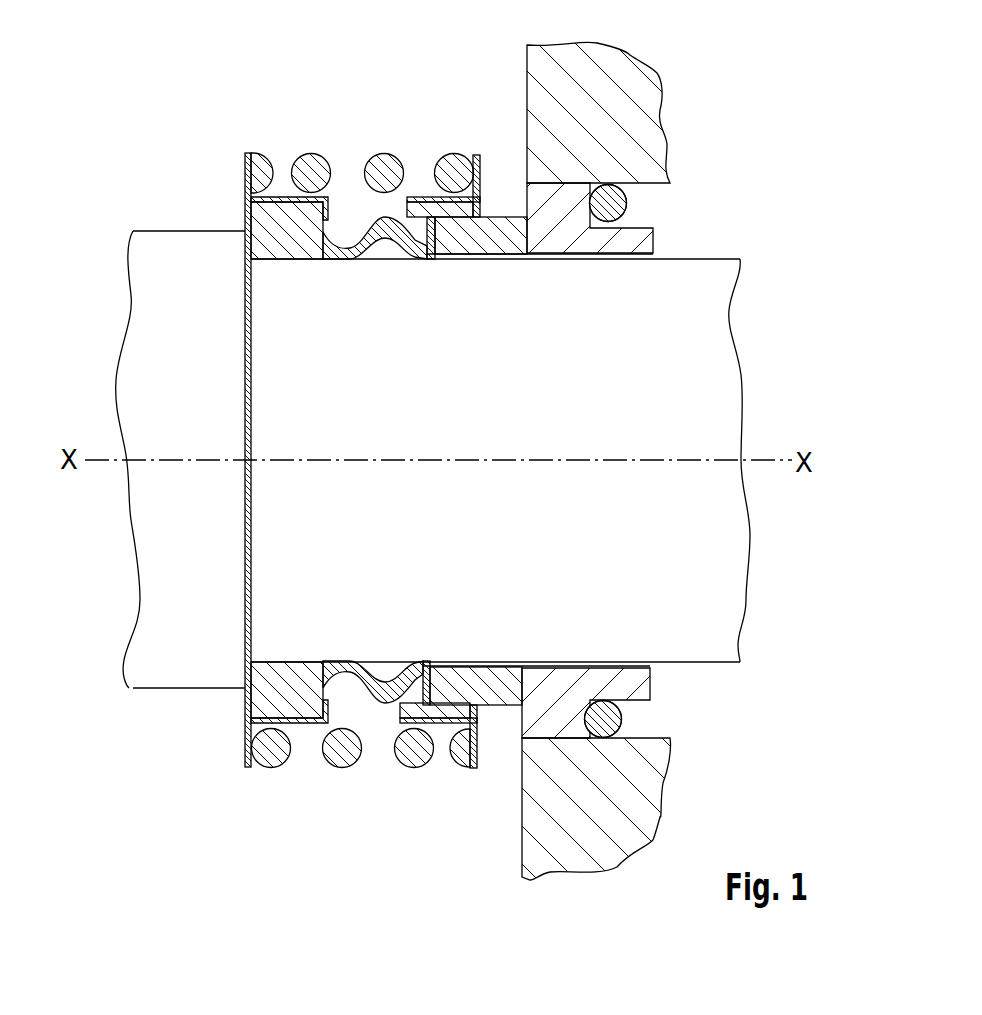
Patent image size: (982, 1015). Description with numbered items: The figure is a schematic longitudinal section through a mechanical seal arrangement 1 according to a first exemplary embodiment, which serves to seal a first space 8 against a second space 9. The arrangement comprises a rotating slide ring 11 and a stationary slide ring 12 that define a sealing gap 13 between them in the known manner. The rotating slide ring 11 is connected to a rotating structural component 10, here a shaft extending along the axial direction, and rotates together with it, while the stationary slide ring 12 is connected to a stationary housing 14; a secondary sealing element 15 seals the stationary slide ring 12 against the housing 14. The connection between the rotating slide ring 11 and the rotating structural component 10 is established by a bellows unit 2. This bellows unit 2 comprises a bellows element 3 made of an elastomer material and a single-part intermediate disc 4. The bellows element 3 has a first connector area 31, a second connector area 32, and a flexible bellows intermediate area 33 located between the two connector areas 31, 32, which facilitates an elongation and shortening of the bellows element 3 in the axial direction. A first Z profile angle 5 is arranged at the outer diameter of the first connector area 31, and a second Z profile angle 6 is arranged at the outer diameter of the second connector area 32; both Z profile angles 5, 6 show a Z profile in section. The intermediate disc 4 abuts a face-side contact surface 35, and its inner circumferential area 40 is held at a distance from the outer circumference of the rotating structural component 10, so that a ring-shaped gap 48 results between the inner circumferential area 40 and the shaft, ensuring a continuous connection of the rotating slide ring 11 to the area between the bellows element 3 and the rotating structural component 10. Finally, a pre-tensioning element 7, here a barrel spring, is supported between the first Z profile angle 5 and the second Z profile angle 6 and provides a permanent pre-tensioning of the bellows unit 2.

The mechanical seal arrangement 1 is at (226, 80).
The bellows unit 2 is at (310, 785).
The bellows element 3 is at (376, 712).
The intermediate disc 4 is at (436, 724).
The first Z profile angle 5 is at (243, 750).
The second Z profile angle 6 is at (481, 744).
The pre-tensioning element 7 is at (310, 168).
The first space 8 is at (400, 84).
The second space 9 is at (732, 218).
The rotating structural component 10 is at (722, 365).
The rotating slide ring 11 is at (498, 218).
The stationary slide ring 12 is at (645, 240).
The sealing gap 13 is at (530, 240).
The stationary housing 14 is at (653, 107).
The secondary sealing element 15 is at (615, 202).
The first connector area 31 is at (281, 218).
The second connector area 32 is at (457, 175).
The bellows intermediate area 33 is at (343, 230).
The face-side contact surface 35 is at (448, 667).
The inner circumferential area 40 is at (429, 256).
The ring-shaped gap 48 is at (427, 666).